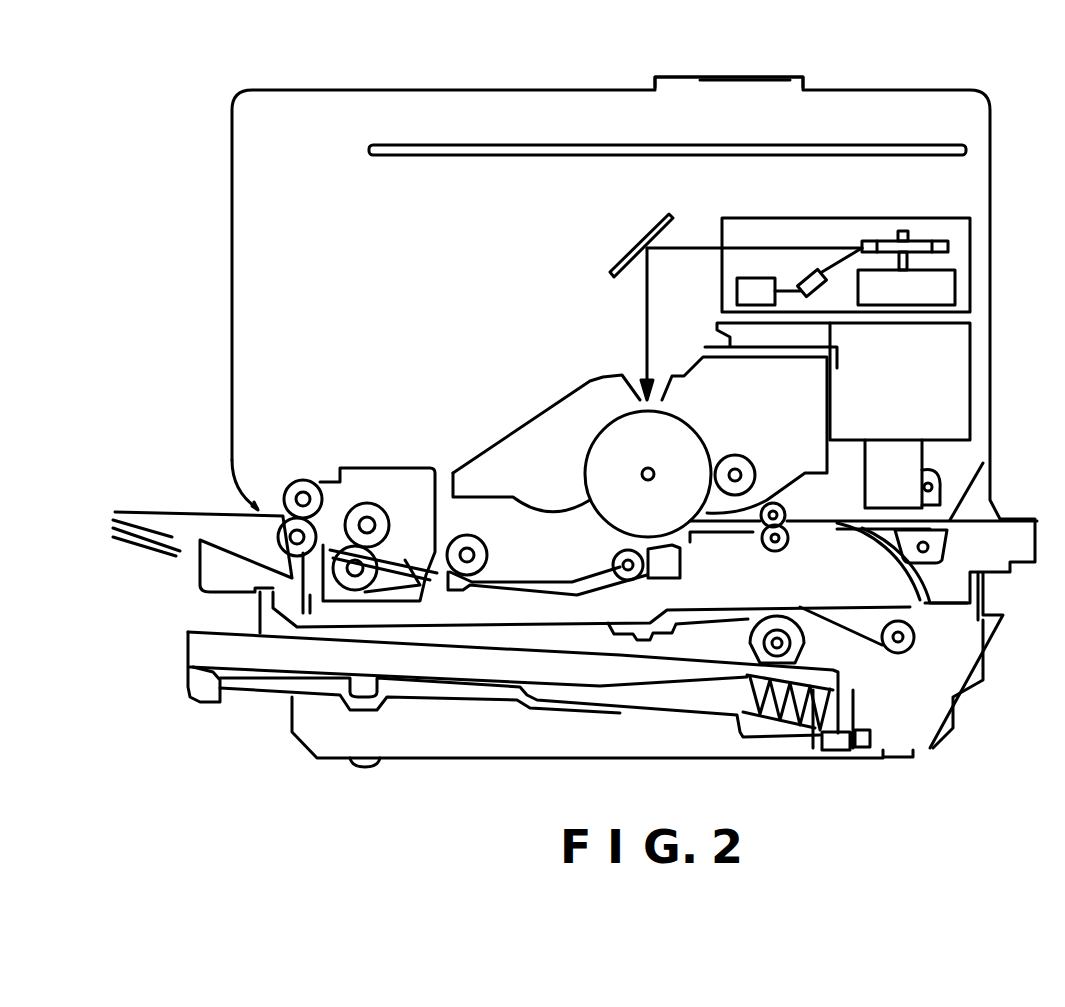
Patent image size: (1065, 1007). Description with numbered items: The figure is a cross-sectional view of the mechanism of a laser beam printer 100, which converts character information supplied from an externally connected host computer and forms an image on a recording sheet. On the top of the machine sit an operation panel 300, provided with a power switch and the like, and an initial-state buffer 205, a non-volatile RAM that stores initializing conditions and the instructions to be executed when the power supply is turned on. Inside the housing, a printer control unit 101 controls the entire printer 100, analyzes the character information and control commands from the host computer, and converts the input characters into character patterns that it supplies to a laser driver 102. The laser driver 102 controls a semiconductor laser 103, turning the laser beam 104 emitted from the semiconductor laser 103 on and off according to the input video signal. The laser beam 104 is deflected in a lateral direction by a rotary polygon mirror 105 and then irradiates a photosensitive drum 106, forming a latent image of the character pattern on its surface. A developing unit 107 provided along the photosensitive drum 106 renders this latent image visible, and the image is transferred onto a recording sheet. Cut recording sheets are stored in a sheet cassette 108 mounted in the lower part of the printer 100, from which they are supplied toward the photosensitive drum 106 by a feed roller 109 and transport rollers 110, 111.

The laser beam printer 100 is at (863, 88).
The printer control unit 101 is at (877, 143).
The laser driver 102 is at (740, 291).
The semiconductor laser 103 is at (815, 297).
The laser beam 104 is at (835, 247).
The rotary polygon mirror 105 is at (950, 247).
The photosensitive drum 106 is at (692, 437).
The developing unit 107 is at (503, 447).
The sheet cassette 108 is at (185, 663).
The feed roller 109 is at (777, 640).
The transport roller 110 is at (900, 655).
The transport roller 111 is at (750, 548).
The initial-state buffer 205 is at (773, 77).
The operation panel 300 is at (690, 77).